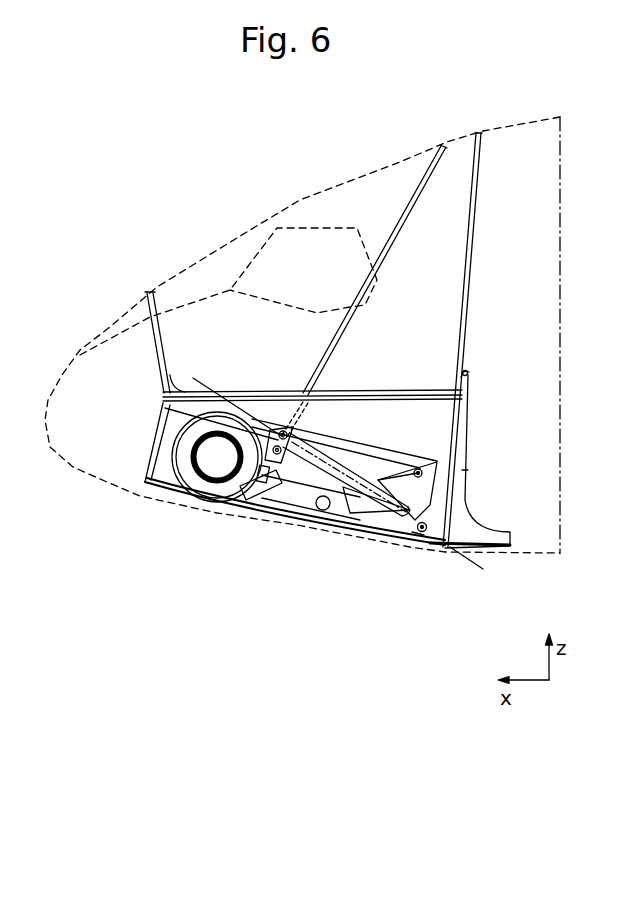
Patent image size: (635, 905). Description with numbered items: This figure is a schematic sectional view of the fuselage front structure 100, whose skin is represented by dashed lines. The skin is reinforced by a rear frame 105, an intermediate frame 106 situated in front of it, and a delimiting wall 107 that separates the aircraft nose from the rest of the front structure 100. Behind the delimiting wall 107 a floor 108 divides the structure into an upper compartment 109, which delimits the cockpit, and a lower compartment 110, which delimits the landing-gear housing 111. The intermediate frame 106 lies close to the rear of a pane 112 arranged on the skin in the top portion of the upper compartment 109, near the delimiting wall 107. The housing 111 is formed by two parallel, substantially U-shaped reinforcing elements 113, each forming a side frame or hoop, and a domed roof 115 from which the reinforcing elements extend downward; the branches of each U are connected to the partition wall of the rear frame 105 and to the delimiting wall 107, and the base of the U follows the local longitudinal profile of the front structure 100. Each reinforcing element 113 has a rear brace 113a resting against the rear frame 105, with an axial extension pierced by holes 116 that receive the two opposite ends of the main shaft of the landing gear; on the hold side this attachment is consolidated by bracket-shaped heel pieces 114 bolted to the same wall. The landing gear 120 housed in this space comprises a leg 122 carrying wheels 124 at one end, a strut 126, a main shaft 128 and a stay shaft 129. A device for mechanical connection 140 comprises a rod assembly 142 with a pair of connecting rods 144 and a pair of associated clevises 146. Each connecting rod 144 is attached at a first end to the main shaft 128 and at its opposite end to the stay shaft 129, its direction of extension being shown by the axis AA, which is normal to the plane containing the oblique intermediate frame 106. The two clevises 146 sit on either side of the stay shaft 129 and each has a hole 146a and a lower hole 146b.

The front structure 100 is at (134, 191).
The rear frame 105 is at (469, 278).
The intermediate frame 106 is at (401, 223).
The delimiting wall 107 is at (157, 343).
The floor 108 is at (463, 395).
The upper compartment 109 is at (440, 323).
The lower compartment 110 is at (160, 478).
The landing-gear housing 111 is at (358, 558).
The pane 112 is at (338, 212).
The reinforcing element 113 is at (215, 508).
The rear brace 113a is at (437, 556).
The heel piece 114 is at (462, 472).
The domed roof 115 is at (440, 423).
The hole 116 is at (418, 533).
The landing gear 120 is at (428, 500).
The leg 122 is at (315, 484).
The wheels 124 is at (190, 498).
The strut 126 is at (385, 468).
The main shaft 128 is at (424, 548).
The stay shaft 129 is at (290, 405).
The device for mechanical connection 140 is at (315, 510).
The rod assembly 142 is at (421, 470).
The connecting rod 144 is at (345, 497).
The clevis 146 is at (313, 435).
The hole 146a is at (281, 425).
The lower hole 146b is at (263, 520).
The axis A-A AA is at (196, 380).